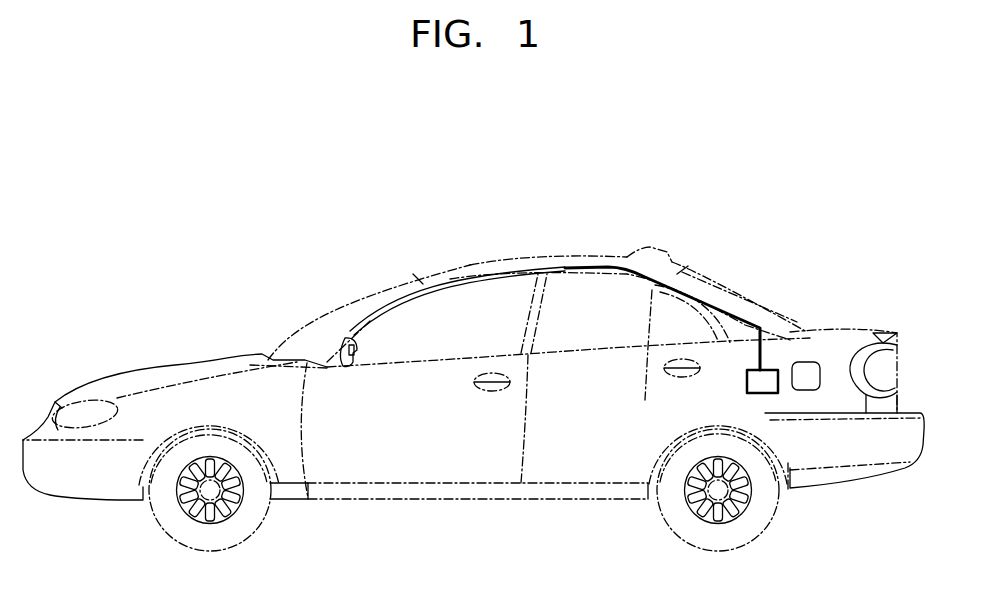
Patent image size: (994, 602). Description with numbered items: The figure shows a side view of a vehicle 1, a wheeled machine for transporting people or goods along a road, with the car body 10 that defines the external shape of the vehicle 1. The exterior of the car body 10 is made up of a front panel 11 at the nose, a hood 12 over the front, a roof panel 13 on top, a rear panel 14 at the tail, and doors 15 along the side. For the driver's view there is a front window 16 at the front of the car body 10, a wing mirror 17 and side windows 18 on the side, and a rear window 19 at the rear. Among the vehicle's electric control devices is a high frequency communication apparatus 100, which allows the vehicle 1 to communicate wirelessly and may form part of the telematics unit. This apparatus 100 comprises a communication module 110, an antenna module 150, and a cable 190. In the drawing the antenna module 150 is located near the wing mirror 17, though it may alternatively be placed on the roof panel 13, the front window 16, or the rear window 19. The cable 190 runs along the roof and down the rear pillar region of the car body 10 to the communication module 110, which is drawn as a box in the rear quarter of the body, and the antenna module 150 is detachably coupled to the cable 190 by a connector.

The vehicle 1 is at (823, 172).
The car body 10 is at (421, 238).
The front panel 11 is at (120, 483).
The hood 12 is at (170, 365).
The roof panel 13 is at (537, 260).
The rear panel 14 is at (817, 407).
The doors 15 is at (460, 465).
The front window 16 is at (393, 283).
The wing mirror 17 is at (340, 335).
The side windows 18 is at (493, 282).
The rear window 19 is at (707, 274).
The high frequency communication apparatus 100 is at (252, 291).
The communication module 110 is at (780, 368).
The antenna module 150 is at (339, 350).
The cable 190 is at (740, 312).